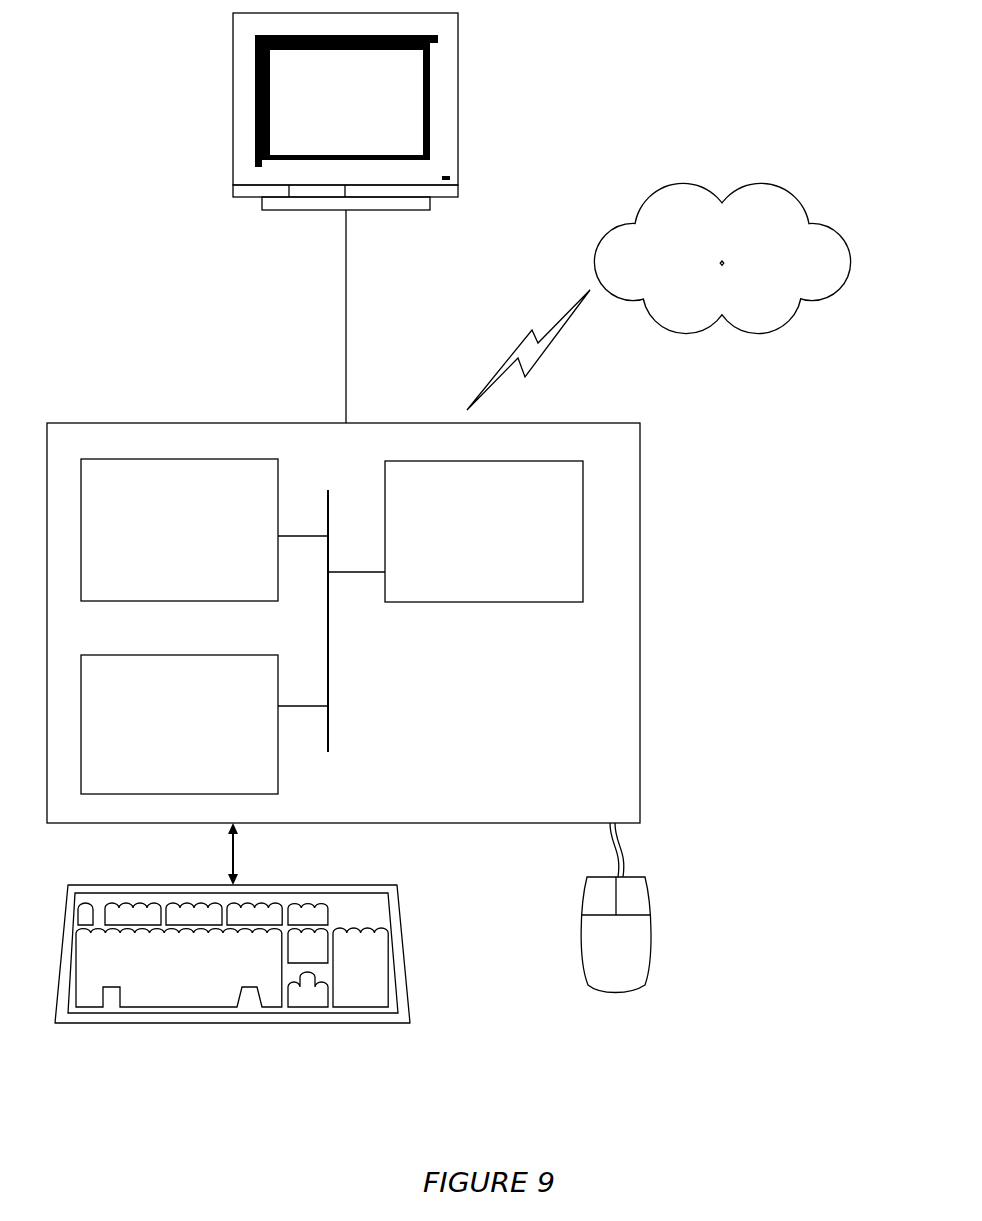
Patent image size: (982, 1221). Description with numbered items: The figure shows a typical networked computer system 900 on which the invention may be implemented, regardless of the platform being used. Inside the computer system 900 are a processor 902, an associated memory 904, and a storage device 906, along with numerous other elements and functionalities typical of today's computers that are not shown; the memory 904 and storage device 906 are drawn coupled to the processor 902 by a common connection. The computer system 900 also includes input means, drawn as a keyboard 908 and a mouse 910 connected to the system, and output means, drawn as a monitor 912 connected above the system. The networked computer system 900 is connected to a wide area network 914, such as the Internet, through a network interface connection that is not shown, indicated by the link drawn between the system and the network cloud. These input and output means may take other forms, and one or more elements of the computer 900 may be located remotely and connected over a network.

The networked computer system 900 is at (657, 675).
The processor 902 is at (481, 540).
The memory 904 is at (163, 538).
The storage device 906 is at (163, 733).
The keyboard 908 is at (155, 988).
The mouse 910 is at (599, 950).
The monitor 912 is at (321, 114).
The wide area network 914 is at (718, 278).